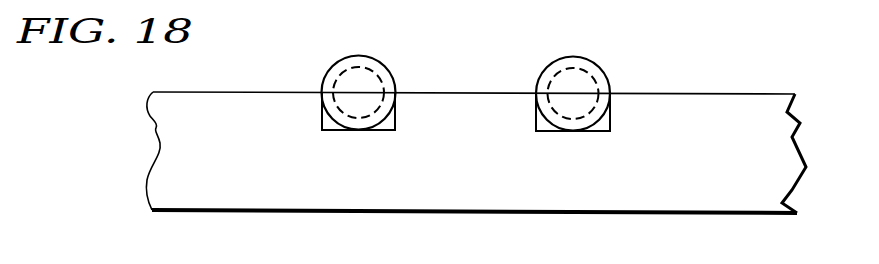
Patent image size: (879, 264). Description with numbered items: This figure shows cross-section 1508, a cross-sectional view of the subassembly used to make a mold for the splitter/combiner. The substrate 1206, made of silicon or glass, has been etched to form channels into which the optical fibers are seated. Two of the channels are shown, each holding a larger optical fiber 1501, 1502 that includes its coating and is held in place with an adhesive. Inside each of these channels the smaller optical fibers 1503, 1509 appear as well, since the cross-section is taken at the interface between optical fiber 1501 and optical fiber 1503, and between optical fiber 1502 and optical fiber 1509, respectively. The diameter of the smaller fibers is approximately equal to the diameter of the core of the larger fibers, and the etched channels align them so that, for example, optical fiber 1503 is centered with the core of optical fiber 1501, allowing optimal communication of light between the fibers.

The cross-section 1508 is at (413, 107).
The substrate 1206 is at (172, 177).
The optical fiber 1501 is at (333, 65).
The optical fiber 1503 is at (365, 68).
The optical fiber 1502 is at (575, 56).
The optical fiber 1509 is at (586, 71).